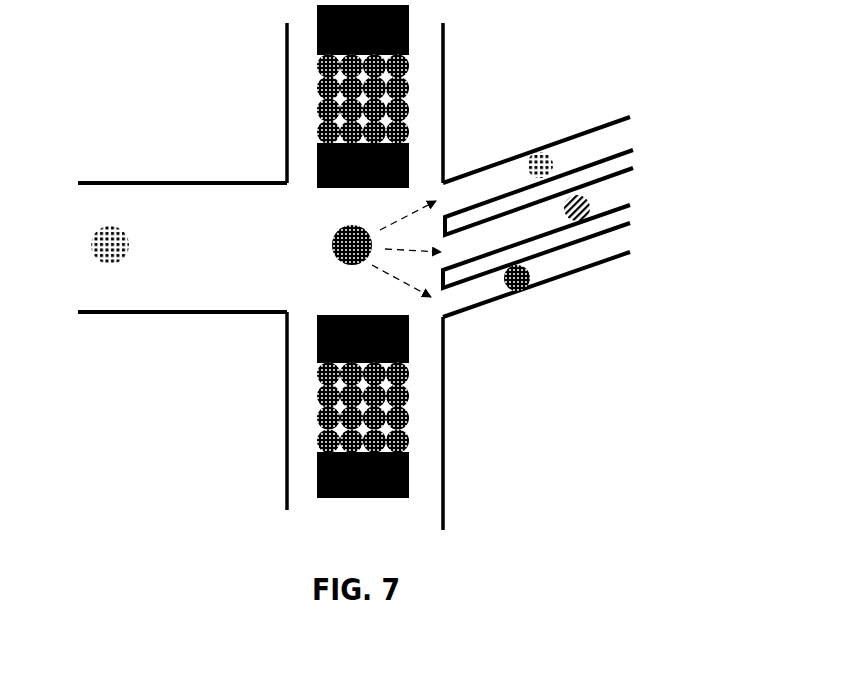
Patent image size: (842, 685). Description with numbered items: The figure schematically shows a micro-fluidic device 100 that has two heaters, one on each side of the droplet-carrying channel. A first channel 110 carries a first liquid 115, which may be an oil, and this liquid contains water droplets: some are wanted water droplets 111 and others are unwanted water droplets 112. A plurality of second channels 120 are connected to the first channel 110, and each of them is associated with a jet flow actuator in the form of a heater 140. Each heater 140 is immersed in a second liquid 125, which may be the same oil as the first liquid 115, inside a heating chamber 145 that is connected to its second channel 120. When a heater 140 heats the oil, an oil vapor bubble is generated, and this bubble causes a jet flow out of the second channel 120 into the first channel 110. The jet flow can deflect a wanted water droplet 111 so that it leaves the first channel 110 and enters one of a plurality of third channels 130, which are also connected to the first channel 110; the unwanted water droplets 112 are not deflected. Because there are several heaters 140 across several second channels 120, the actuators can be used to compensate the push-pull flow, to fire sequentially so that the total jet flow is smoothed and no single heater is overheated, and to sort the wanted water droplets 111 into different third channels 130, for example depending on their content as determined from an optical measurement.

The micro-fluidic device 100 is at (135, 125).
The first channel 110 is at (113, 312).
The wanted water droplet 111 is at (338, 240).
The unwanted water droplet 112 is at (103, 240).
The first liquid 115 is at (216, 189).
The second channel 120 is at (287, 162).
The second liquid 125 is at (425, 57).
The third channel 130 is at (627, 223).
The heater 140 is at (410, 117).
The heating chamber 145 is at (287, 27).